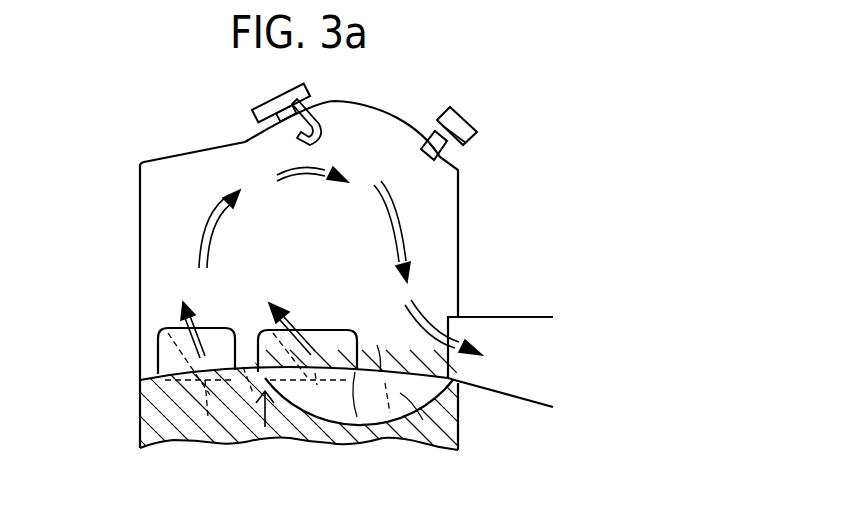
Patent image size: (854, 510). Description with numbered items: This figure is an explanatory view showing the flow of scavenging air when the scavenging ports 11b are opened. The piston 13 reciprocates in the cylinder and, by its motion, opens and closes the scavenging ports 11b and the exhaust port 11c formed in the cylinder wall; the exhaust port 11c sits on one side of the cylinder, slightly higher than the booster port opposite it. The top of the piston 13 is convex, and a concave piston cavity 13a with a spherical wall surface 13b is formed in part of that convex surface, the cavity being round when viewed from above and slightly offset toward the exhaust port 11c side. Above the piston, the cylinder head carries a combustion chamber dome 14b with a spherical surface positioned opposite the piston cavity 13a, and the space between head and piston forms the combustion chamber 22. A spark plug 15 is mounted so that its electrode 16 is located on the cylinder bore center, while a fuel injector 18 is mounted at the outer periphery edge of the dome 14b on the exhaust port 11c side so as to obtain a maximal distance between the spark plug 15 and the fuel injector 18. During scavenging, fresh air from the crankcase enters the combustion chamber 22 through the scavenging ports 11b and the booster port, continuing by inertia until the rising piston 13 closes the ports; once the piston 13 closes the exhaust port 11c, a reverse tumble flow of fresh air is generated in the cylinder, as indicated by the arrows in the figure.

The scavenging ports 11b is at (330, 343).
The exhaust port 11c is at (523, 367).
The piston 13 is at (162, 414).
The piston cavity 13a is at (427, 437).
The spherical wall surface 13b is at (377, 345).
The combustion chamber dome 14b is at (365, 123).
The spark plug 15 is at (265, 108).
The electrode 16 is at (297, 140).
The fuel injector 18 is at (440, 152).
The combustion chamber 22 is at (156, 203).